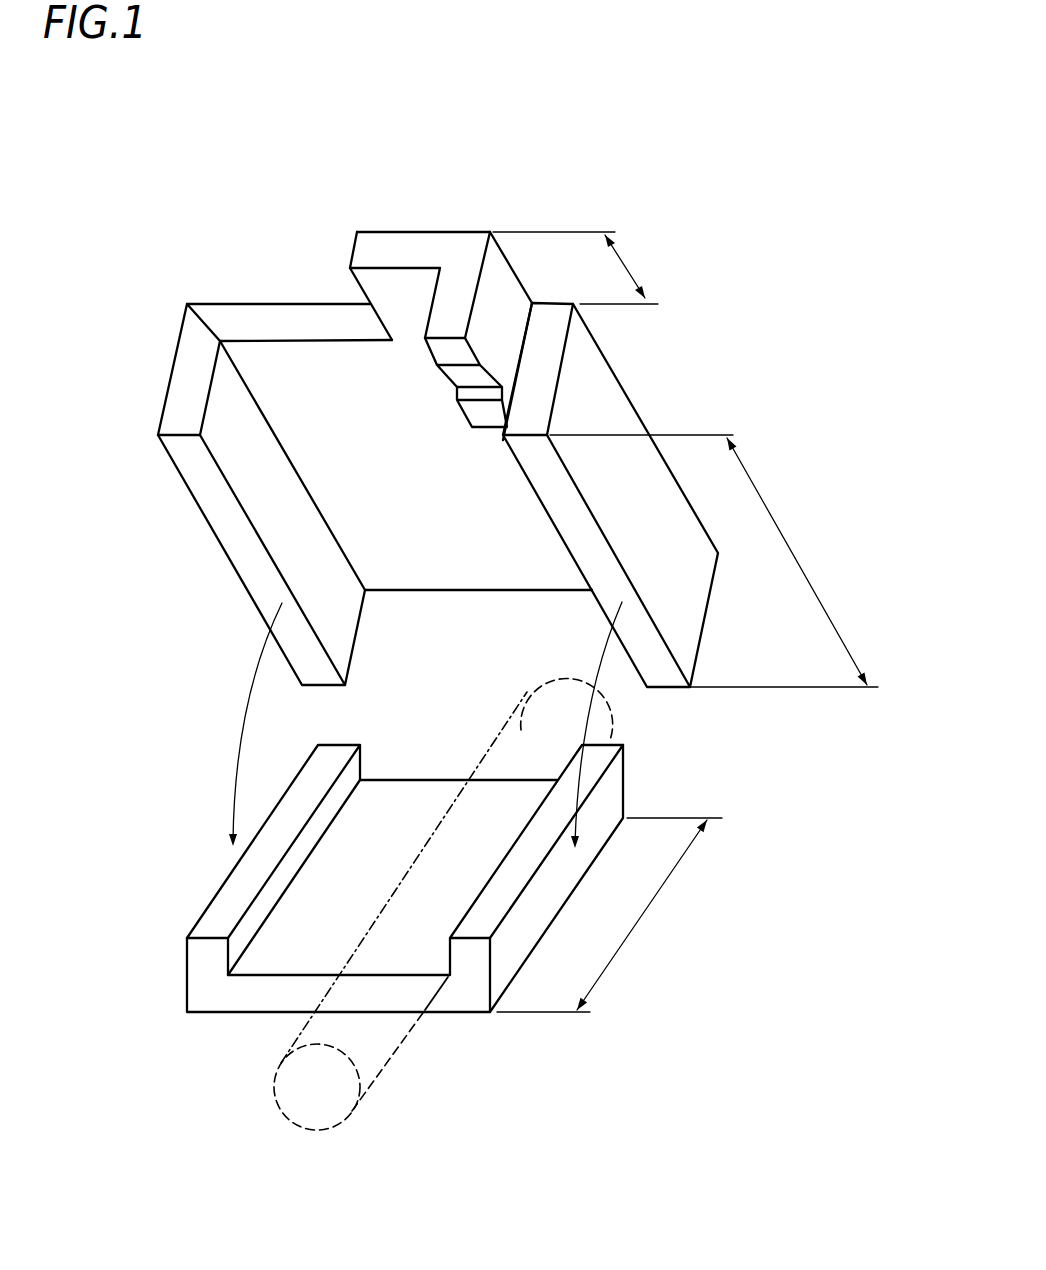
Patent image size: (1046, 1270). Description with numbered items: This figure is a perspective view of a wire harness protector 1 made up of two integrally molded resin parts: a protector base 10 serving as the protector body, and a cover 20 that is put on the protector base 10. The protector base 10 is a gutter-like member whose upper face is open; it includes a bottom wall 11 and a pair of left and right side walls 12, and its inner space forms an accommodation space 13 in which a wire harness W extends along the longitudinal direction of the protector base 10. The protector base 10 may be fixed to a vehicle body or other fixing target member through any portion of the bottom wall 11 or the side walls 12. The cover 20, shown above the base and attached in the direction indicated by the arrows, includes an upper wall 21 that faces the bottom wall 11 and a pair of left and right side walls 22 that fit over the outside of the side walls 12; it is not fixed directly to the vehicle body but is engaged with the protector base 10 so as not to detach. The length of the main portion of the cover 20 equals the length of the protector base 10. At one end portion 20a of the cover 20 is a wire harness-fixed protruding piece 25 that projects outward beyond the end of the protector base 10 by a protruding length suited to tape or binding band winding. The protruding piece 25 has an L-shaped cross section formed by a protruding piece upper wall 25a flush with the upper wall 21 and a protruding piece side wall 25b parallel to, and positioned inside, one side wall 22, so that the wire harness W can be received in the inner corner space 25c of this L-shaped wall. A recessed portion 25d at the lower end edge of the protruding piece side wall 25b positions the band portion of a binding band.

The wire harness protector 1 is at (99, 538).
The protector base 10 is at (176, 964).
The bottom wall 11 is at (273, 997).
The side walls 12 is at (223, 915).
The accommodation space 13 is at (412, 798).
The cover 20 is at (200, 517).
The one end portion 20a is at (263, 320).
The upper wall 21 is at (300, 300).
The side walls 22 is at (188, 394).
The wire harness-fixed protruding piece 25 is at (463, 230).
The protruding piece upper wall 25a is at (415, 247).
The protruding piece side wall 25b is at (497, 297).
The inner corner space 25c is at (392, 285).
The recessed portion 25d is at (487, 378).
The wire harness W is at (530, 703).